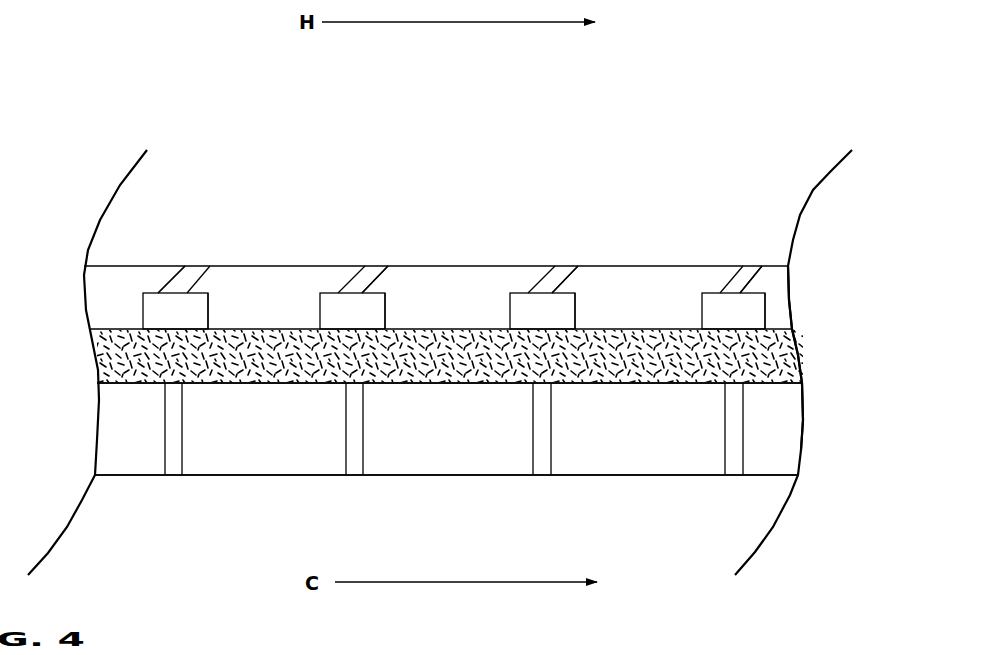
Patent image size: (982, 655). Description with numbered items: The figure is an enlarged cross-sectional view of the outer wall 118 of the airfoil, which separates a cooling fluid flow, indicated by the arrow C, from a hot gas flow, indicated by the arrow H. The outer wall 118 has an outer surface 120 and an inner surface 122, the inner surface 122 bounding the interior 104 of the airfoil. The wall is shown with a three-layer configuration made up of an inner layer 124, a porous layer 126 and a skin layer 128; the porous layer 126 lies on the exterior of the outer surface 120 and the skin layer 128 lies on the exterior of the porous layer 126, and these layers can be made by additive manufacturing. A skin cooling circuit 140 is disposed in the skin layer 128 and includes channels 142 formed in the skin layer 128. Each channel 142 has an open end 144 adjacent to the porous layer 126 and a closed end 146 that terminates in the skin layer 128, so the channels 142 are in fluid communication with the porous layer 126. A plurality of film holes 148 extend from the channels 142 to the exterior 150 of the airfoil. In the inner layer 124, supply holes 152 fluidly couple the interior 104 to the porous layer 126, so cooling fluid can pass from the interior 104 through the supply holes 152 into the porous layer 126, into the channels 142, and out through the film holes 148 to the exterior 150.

The interior 104 is at (347, 546).
The outer wall 118 is at (183, 143).
The outer surface 120 is at (278, 383).
The inner surface 122 is at (513, 475).
The inner layer 124 is at (808, 410).
The porous layer 126 is at (805, 348).
The skin layer 128 is at (797, 304).
The skin cooling circuit 140 is at (140, 311).
The channel 142 is at (208, 310).
The open end 144 is at (322, 352).
The closed end 146 is at (157, 293).
The film holes 148 is at (176, 280).
The exterior 150 is at (431, 77).
The supply hole 152 is at (183, 435).